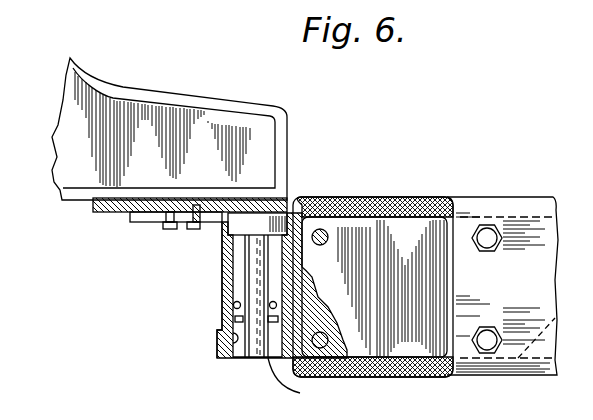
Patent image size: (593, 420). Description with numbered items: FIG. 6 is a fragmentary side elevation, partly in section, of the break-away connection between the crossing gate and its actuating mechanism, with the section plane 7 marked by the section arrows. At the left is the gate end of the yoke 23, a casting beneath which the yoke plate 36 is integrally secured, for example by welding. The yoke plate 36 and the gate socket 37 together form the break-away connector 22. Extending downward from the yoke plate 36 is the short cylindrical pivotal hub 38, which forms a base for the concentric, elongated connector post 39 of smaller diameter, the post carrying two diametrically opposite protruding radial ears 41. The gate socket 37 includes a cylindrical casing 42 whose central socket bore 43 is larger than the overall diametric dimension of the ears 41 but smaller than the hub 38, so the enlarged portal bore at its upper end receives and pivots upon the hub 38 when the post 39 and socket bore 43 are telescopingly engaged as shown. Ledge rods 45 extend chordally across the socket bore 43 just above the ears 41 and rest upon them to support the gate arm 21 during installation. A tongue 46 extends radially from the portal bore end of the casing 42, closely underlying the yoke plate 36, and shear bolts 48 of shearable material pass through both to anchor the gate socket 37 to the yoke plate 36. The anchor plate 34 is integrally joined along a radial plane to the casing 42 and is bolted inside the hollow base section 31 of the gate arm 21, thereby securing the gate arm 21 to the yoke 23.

The section line 7- 7 is at (267, 70).
The traffic control gate arm 21 is at (517, 190).
The break-away connector 22 is at (192, 255).
The yoke 23 is at (107, 72).
The base section 31 is at (423, 200).
The anchor plate 34 is at (363, 233).
The yoke plate 36 is at (122, 211).
The gate socket 37 is at (212, 355).
The pivotal hub 38 is at (240, 225).
The connector post 39 is at (253, 278).
The radial ears 41 is at (236, 318).
The cylindrical casing 42 is at (300, 393).
The socket bore 43 is at (236, 340).
The ledge rods 45 is at (233, 305).
The tongue 46 is at (140, 221).
The shear bolts 48 is at (191, 230).